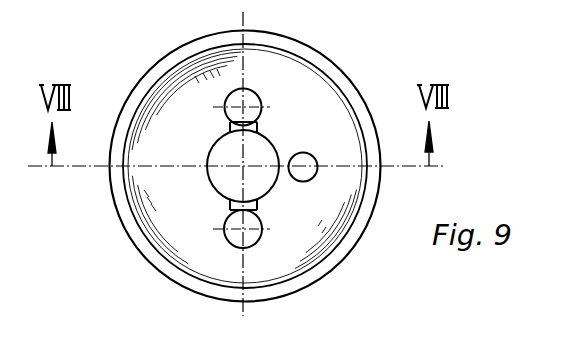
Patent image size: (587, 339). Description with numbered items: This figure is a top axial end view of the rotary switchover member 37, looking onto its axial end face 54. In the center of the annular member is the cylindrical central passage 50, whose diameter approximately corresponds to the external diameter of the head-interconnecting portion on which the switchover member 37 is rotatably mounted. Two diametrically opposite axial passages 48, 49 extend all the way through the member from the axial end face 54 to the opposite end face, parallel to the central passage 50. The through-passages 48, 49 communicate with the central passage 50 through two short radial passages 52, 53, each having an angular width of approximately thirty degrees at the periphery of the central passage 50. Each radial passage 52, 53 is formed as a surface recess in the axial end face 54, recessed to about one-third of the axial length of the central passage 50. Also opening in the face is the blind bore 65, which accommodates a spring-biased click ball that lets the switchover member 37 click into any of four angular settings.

The rotary switchover member 37 is at (121, 52).
The axial passage 48 is at (259, 100).
The axial passage 49 is at (260, 236).
The central passage 50 is at (270, 164).
The radial passage 52 is at (258, 125).
The radial passage 53 is at (258, 207).
The axial end face 54 is at (183, 141).
The blind bore 65 is at (314, 157).